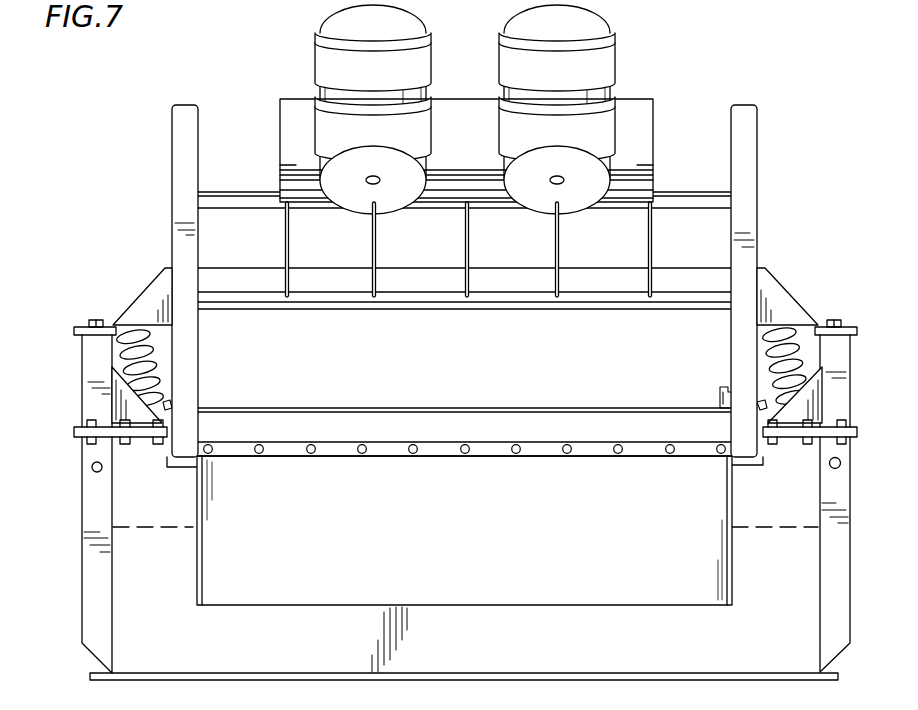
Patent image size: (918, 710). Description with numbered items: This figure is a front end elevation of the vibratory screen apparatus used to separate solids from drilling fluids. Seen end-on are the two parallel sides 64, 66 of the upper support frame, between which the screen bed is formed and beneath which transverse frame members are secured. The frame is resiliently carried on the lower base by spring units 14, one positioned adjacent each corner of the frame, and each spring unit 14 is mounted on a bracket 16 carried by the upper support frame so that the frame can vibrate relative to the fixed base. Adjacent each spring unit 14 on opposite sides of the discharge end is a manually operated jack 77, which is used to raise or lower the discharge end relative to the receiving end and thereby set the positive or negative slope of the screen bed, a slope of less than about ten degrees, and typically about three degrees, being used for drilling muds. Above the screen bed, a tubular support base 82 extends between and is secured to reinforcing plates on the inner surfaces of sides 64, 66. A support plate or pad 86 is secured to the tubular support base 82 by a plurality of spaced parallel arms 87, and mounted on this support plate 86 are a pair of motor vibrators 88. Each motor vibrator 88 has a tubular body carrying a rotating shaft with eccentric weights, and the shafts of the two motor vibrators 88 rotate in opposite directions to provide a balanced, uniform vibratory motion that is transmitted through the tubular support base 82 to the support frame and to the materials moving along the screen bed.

The spring unit 14 is at (115, 366).
The bracket 16 is at (150, 292).
The parallel side 64 is at (750, 145).
The parallel side 66 is at (180, 141).
The manually operated jack 77 is at (87, 354).
The tubular support base 82 is at (688, 200).
The support plate 86 is at (640, 113).
The spaced parallel arms 87 is at (372, 252).
The motor vibrator 88 is at (501, 33).